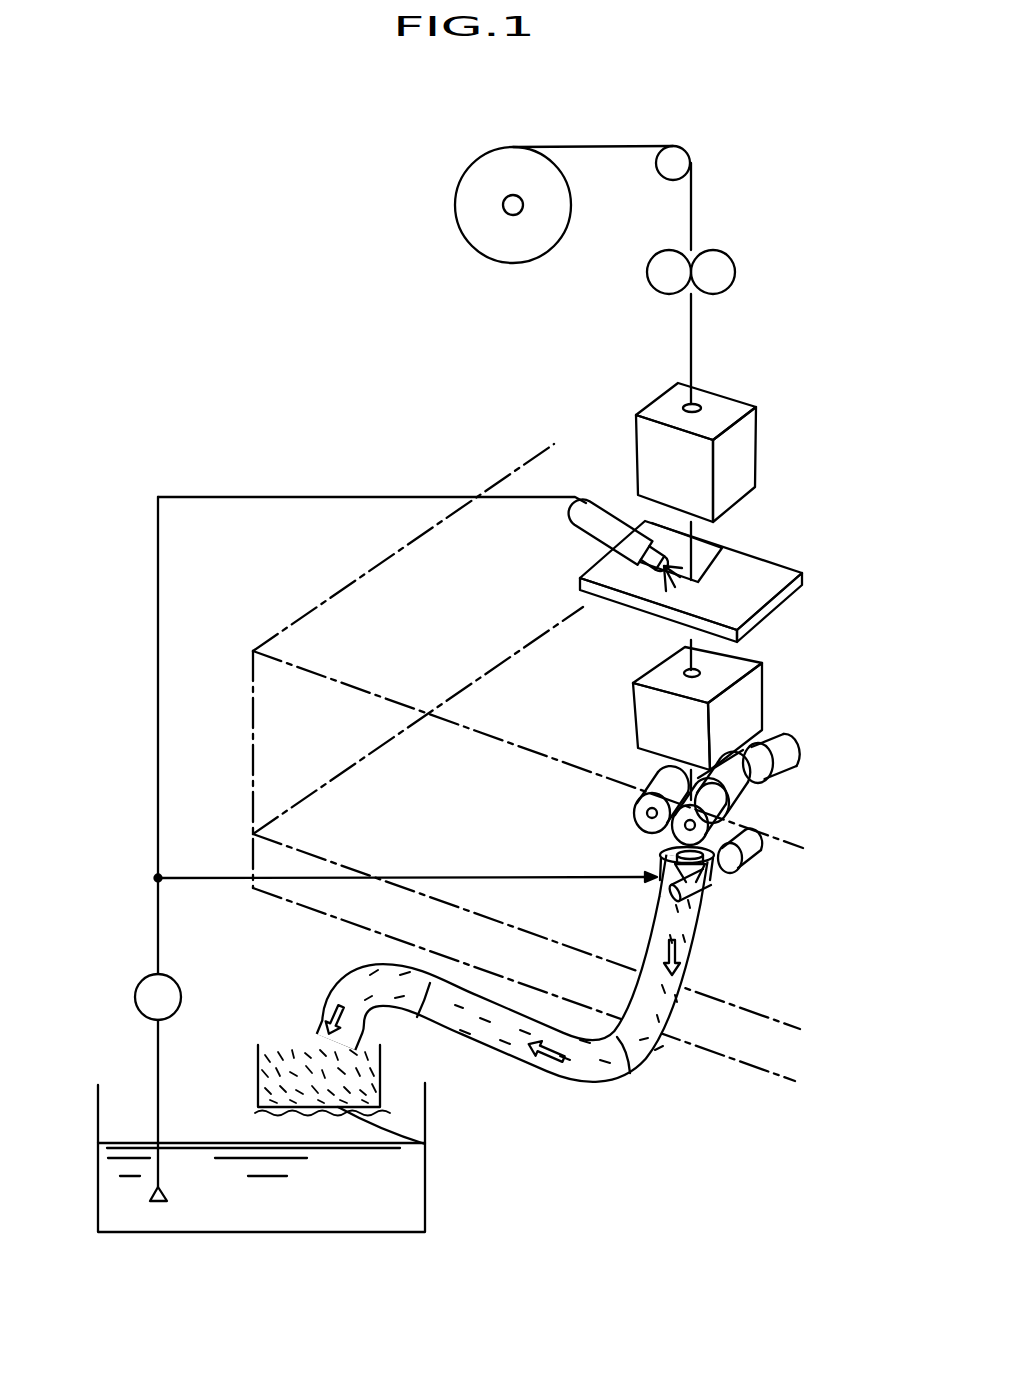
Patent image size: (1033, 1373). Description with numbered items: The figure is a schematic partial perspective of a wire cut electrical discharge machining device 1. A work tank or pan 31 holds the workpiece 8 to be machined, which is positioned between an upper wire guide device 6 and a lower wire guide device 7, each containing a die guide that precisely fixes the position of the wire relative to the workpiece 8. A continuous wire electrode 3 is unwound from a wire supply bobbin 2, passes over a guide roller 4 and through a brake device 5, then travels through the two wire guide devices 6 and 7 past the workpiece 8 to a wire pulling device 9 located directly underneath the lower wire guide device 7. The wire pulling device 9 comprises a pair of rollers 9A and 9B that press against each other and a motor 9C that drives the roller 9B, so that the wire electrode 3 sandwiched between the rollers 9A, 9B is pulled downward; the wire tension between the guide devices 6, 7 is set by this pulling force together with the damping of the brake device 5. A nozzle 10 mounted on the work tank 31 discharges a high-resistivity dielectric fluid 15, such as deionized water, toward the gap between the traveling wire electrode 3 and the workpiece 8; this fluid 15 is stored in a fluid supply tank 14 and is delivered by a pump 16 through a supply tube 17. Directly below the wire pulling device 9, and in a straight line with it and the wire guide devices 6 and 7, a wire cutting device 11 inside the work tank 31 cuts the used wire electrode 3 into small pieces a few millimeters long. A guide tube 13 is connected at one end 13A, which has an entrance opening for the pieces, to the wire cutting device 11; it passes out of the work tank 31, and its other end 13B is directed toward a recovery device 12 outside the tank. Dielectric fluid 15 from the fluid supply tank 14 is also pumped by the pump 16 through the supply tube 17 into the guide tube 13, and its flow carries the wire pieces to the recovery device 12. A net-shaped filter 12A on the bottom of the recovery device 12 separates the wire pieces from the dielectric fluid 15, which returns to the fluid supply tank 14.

The wire cut electrical discharge machining device 1 is at (224, 439).
The wire supply bobbin 2 is at (462, 178).
The wire electrode 3 is at (604, 146).
The guide roller 4 is at (691, 163).
The brake device 5 is at (731, 240).
The upper wire guide device 6 is at (718, 405).
The lower wire guide device 7 is at (740, 678).
The workpiece 8 is at (753, 572).
The wire pulling device 9 is at (703, 803).
The roller 9A is at (660, 785).
The roller 9B is at (728, 805).
The motor 9C is at (790, 757).
The nozzle 10 is at (578, 516).
The wire cutting device 11 is at (727, 905).
The recovery device 12 is at (258, 1075).
The net-shaped filter 12A is at (425, 1144).
The guide tube 13 is at (498, 965).
The one end of guide tube 13A is at (660, 885).
The other end of guide tube 13B is at (312, 1030).
The fluid supply tank 14 is at (427, 1112).
The dielectric fluid 15 is at (314, 1205).
The pump 16 is at (182, 998).
The supply tube 17 is at (160, 930).
The work tank 31 is at (355, 578).